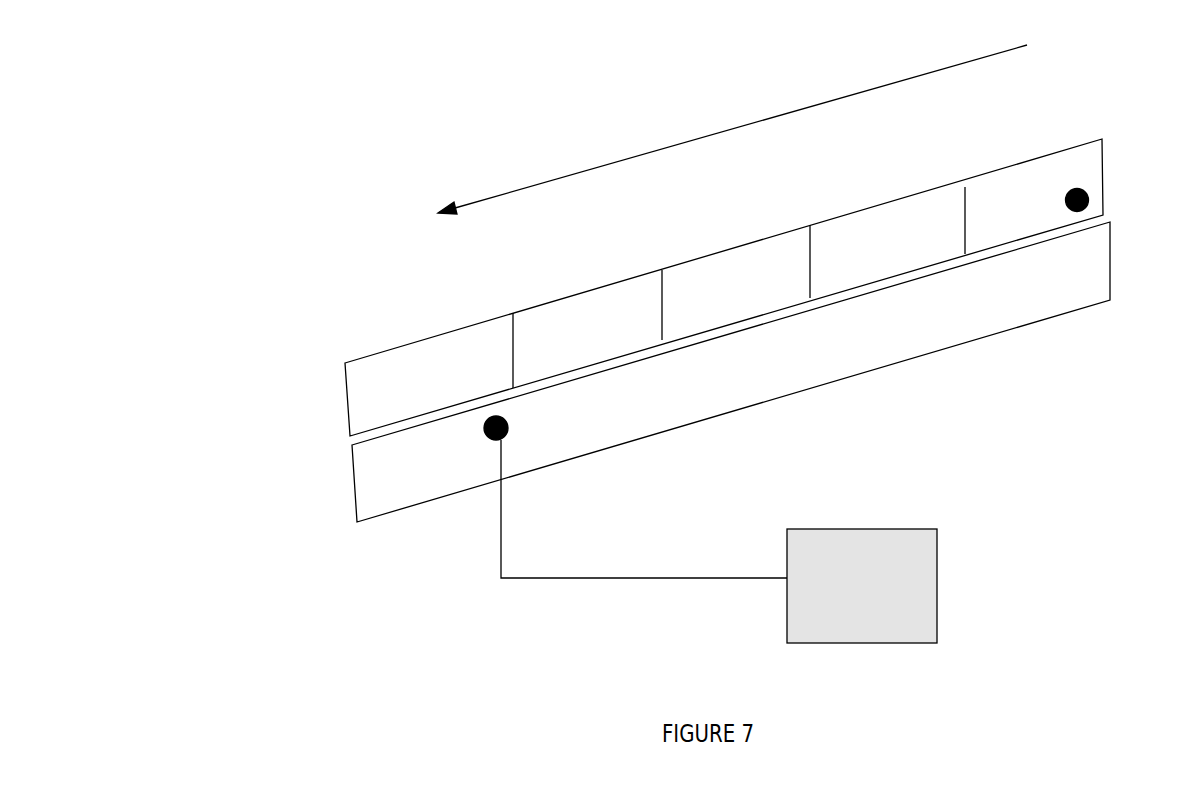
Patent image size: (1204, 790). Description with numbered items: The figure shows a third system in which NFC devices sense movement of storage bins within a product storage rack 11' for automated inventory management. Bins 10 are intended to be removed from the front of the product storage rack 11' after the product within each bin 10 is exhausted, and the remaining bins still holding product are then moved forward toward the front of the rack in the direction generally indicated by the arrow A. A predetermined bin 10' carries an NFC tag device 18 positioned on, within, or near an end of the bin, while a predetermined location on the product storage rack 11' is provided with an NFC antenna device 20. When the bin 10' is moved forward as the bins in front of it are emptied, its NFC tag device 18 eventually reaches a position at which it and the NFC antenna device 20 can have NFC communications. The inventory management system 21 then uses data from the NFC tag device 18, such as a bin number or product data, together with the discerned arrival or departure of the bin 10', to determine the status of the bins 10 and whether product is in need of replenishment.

The arrow A is at (603, 165).
The bin 10 is at (694, 304).
The bin 10' is at (724, 282).
The product storage rack 11' is at (737, 372).
The NFC tag device 18 is at (1077, 190).
The NFC antenna device 20 is at (488, 440).
The inventory management system 21 is at (940, 550).